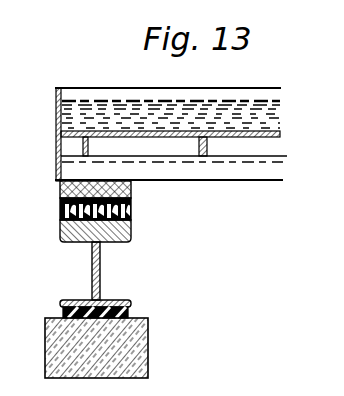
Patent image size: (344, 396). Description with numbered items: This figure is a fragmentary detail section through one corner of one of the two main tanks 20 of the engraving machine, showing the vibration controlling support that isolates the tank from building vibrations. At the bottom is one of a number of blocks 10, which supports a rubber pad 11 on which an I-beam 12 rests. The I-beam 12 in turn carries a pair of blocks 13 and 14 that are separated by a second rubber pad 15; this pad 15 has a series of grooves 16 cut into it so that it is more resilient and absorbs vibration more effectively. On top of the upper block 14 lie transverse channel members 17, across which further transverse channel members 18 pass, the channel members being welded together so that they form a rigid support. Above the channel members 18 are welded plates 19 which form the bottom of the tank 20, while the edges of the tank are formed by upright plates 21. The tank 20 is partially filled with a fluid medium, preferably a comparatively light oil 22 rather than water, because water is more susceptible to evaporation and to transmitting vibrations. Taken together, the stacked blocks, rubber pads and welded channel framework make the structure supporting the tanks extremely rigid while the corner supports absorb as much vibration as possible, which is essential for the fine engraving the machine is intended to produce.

The block 10 is at (148, 345).
The rubber pad 11 is at (130, 312).
The I-beam 12 is at (100, 272).
The block 13 is at (133, 232).
The block 14 is at (133, 190).
The rubber pad 15 is at (133, 212).
The groove 16 is at (60, 208).
The transverse channel member 17 is at (265, 175).
The transverse channel member 18 is at (88, 148).
The plate 19 is at (270, 137).
The tank 20 is at (252, 95).
The plate 21 is at (57, 92).
The oil 22 is at (100, 104).